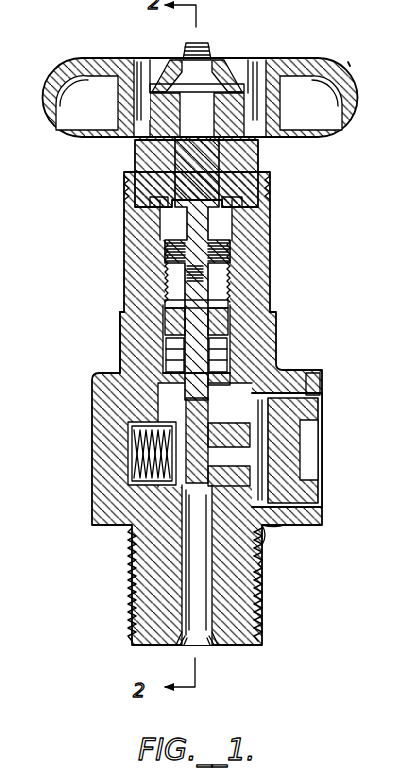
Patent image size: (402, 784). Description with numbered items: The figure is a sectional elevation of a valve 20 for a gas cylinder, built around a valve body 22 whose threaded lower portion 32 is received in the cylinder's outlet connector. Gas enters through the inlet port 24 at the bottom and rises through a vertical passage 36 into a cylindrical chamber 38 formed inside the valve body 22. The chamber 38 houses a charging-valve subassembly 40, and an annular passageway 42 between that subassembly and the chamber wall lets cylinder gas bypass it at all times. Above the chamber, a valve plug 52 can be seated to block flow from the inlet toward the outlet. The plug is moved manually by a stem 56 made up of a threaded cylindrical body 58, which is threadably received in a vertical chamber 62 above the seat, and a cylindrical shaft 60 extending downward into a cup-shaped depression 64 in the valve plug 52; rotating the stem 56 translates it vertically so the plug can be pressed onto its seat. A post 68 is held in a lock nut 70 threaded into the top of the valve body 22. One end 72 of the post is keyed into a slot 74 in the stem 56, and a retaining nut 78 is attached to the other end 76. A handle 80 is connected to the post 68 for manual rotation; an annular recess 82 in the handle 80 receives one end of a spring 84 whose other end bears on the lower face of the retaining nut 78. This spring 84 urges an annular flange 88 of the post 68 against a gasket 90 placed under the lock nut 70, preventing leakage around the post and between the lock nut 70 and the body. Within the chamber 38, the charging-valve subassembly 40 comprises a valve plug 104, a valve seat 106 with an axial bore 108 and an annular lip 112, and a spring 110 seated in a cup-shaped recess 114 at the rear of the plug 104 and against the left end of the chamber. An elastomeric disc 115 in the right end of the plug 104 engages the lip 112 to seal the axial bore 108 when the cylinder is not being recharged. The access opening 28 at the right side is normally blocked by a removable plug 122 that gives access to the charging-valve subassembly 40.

The valve 20 is at (349, 62).
The valve body 22 is at (268, 268).
The inlet port 24 is at (198, 628).
The access opening 28 is at (326, 452).
The lower portion of the valve body 32 is at (243, 602).
The vertical passage 36 is at (192, 572).
The cylindrical chamber 38 is at (195, 472).
The charging-valve subassembly 40 is at (163, 415).
The annular passageway 42 is at (250, 530).
The valve plug 52 is at (228, 388).
The stem 56 is at (200, 316).
The threaded cylindrical body 58 is at (210, 292).
The cylindrical shaft 60 is at (195, 338).
The vertical chamber 62 is at (168, 250).
The cup-shaped depression 64 is at (121, 338).
The post 68 is at (215, 168).
The lock nut 70 is at (140, 153).
The one end of the post 72 is at (198, 252).
The slot 74 is at (190, 282).
The other end of the post 76 is at (200, 45).
The retaining nut 78 is at (218, 50).
The handle 80 is at (78, 60).
The annular recess 82 is at (262, 72).
The spring 84 is at (147, 85).
The annular flange 88 is at (163, 222).
The gasket 90 is at (232, 212).
The valve plug 104 is at (215, 478).
The valve seat 106 is at (275, 528).
The axial bore 108 is at (248, 438).
The spring 110 is at (200, 462).
The annular lip 112 is at (278, 466).
The cup-shaped recess 114 is at (158, 424).
The elastomeric disc 115 is at (321, 374).
The plug 122 is at (248, 452).